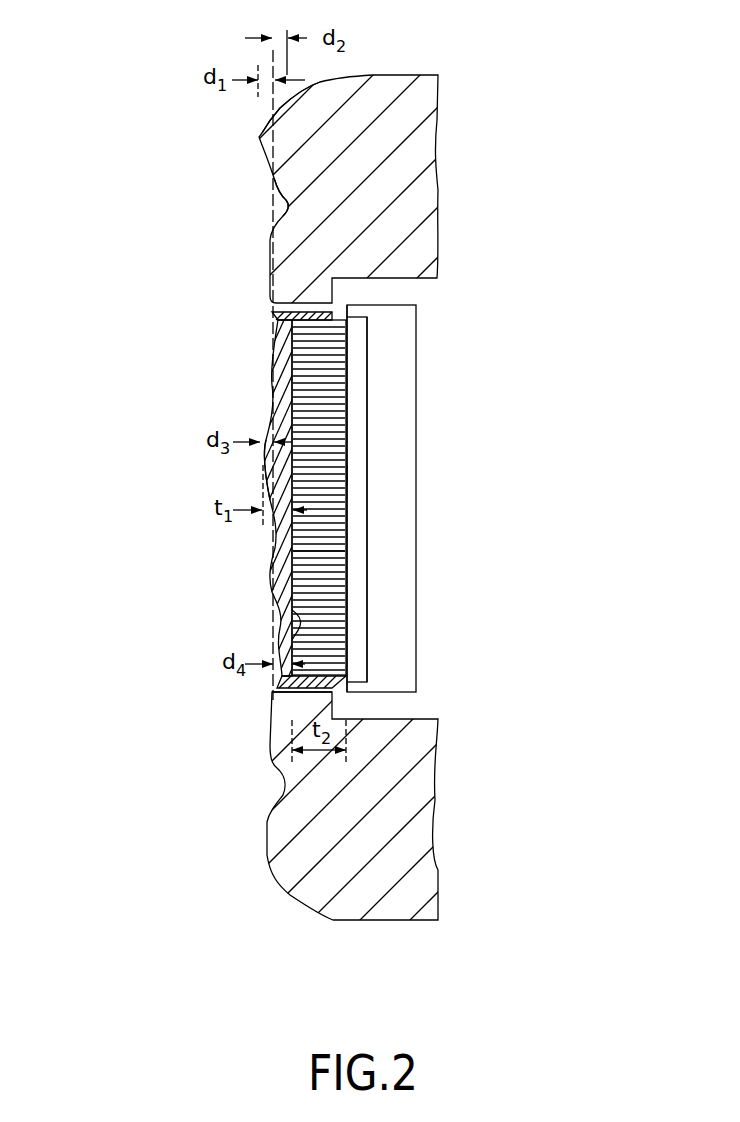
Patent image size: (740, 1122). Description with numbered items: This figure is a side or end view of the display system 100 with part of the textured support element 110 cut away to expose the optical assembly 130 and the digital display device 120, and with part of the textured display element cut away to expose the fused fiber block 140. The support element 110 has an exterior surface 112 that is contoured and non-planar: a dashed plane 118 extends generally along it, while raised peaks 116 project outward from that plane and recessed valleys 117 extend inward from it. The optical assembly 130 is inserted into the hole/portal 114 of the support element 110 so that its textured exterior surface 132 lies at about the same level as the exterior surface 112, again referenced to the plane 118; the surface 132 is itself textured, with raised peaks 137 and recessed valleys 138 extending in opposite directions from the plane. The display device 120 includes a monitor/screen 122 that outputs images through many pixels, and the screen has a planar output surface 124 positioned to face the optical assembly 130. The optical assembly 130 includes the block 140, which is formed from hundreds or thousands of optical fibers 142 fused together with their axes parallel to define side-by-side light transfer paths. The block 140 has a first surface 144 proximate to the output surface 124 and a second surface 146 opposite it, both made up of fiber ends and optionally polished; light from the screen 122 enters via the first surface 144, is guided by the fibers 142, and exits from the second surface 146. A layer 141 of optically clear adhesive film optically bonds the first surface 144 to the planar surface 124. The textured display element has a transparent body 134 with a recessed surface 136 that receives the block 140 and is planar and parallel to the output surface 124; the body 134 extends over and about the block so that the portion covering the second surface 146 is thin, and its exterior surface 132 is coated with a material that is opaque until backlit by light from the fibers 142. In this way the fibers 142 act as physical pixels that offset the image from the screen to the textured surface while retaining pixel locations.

The display system 100 is at (138, 437).
The support element 110 is at (369, 506).
The exterior surface 112 is at (376, 805).
The hole/portal 114 is at (308, 693).
The raised peaks 116 is at (361, 175).
The recessed valleys 117 is at (288, 210).
The plane 118 is at (273, 63).
The digital display device 120 is at (497, 497).
The monitor/screen 122 is at (368, 398).
The output surface 124 is at (347, 317).
The optical assembly 130 is at (274, 504).
The textured exterior surface 132 is at (274, 500).
The body 134 is at (272, 695).
The recessed surface 136 is at (302, 625).
The raised surfaces/peaks 137 is at (262, 443).
The recessed surfaces/valleys 138 is at (303, 618).
The fused fiber block 140 is at (347, 358).
The layer of optically clear adhesive film 141 is at (347, 678).
The optical fibers 142 is at (343, 483).
The first surface 144 is at (321, 497).
The second surface 146 is at (287, 554).